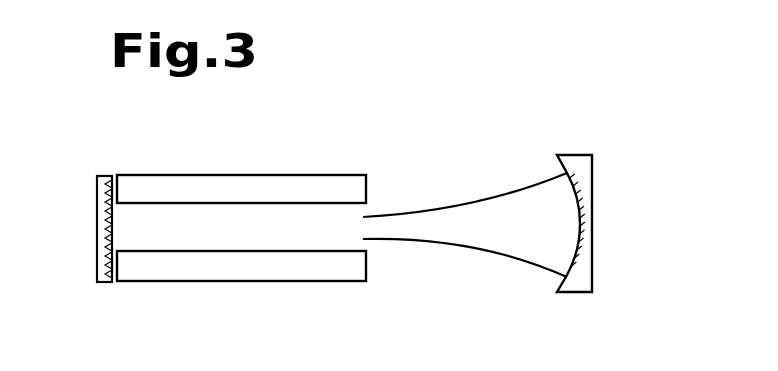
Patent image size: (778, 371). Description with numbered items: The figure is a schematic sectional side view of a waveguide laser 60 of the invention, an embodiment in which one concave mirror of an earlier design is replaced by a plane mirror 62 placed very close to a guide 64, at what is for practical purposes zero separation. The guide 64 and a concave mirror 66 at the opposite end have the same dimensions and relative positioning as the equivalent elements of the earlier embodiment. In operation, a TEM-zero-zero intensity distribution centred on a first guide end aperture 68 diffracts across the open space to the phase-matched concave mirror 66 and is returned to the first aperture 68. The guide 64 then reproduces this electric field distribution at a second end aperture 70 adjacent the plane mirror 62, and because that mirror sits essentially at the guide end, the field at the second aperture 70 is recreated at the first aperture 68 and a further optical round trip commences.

The waveguide laser 60 is at (273, 138).
The plane mirror 62 is at (100, 234).
The guide 64 is at (360, 282).
The concave mirror 66 is at (592, 200).
The first guide end aperture 68 is at (368, 210).
The second end aperture 70 is at (119, 226).